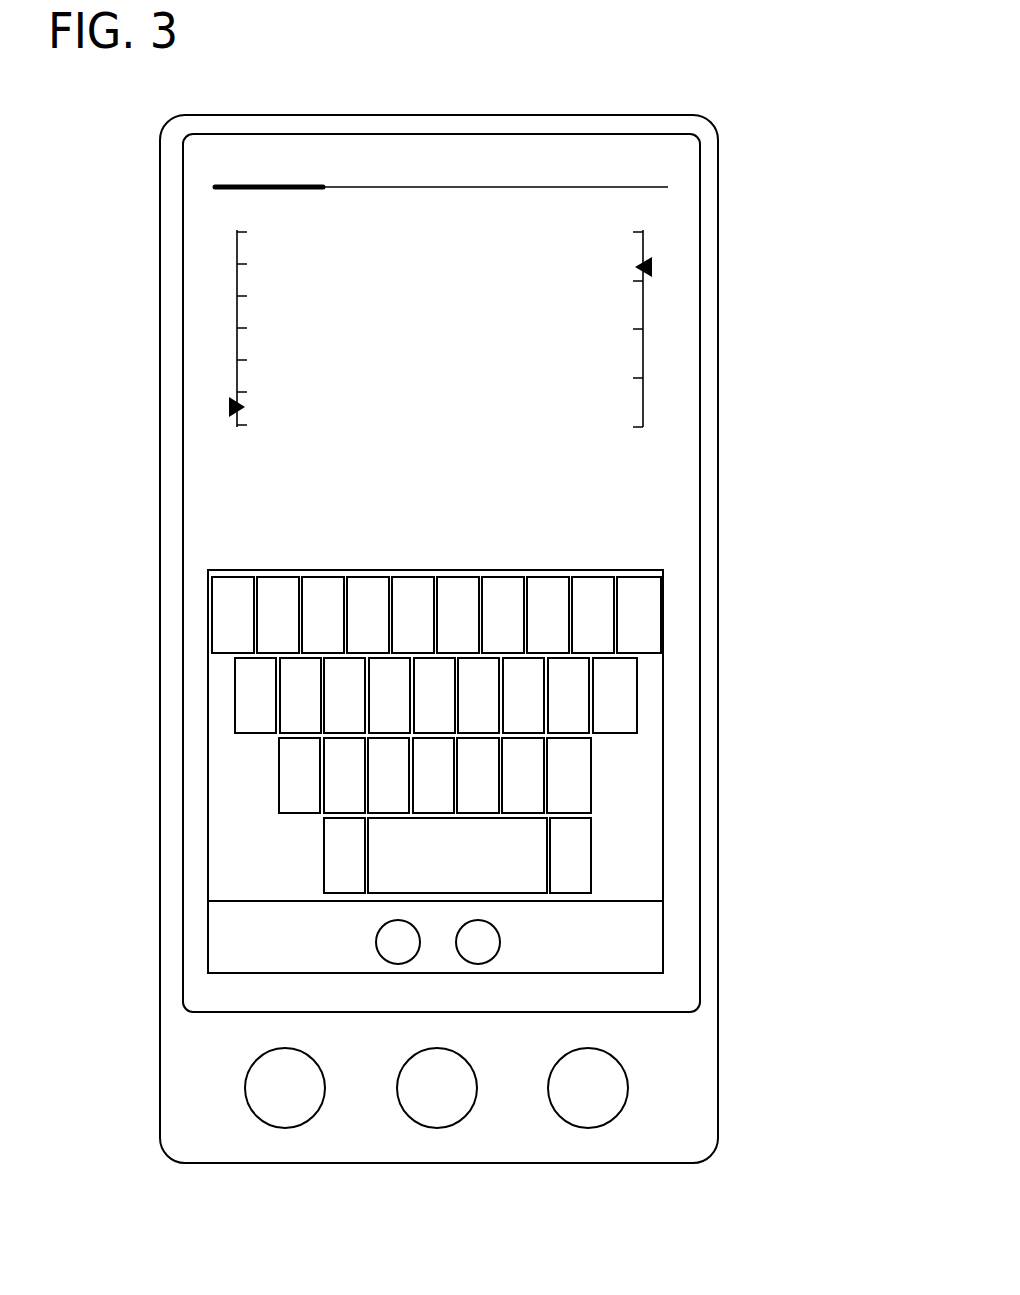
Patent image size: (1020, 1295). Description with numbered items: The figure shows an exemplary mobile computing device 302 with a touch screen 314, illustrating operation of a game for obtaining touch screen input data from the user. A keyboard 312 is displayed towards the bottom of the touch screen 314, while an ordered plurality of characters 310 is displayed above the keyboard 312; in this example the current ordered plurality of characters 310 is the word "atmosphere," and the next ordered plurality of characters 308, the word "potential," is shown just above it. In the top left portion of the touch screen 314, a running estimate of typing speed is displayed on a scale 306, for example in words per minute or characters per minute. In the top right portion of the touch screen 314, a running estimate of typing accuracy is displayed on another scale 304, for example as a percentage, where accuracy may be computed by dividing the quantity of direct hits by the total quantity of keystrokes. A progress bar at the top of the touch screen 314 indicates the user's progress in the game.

The mobile computing device 302 is at (593, 113).
The scale 304 is at (663, 318).
The scale 306 is at (214, 327).
The next ordered plurality of characters 308 is at (440, 435).
The ordered plurality of characters 310 is at (597, 485).
The keyboard 312 is at (665, 686).
The touch screen 314 is at (701, 772).